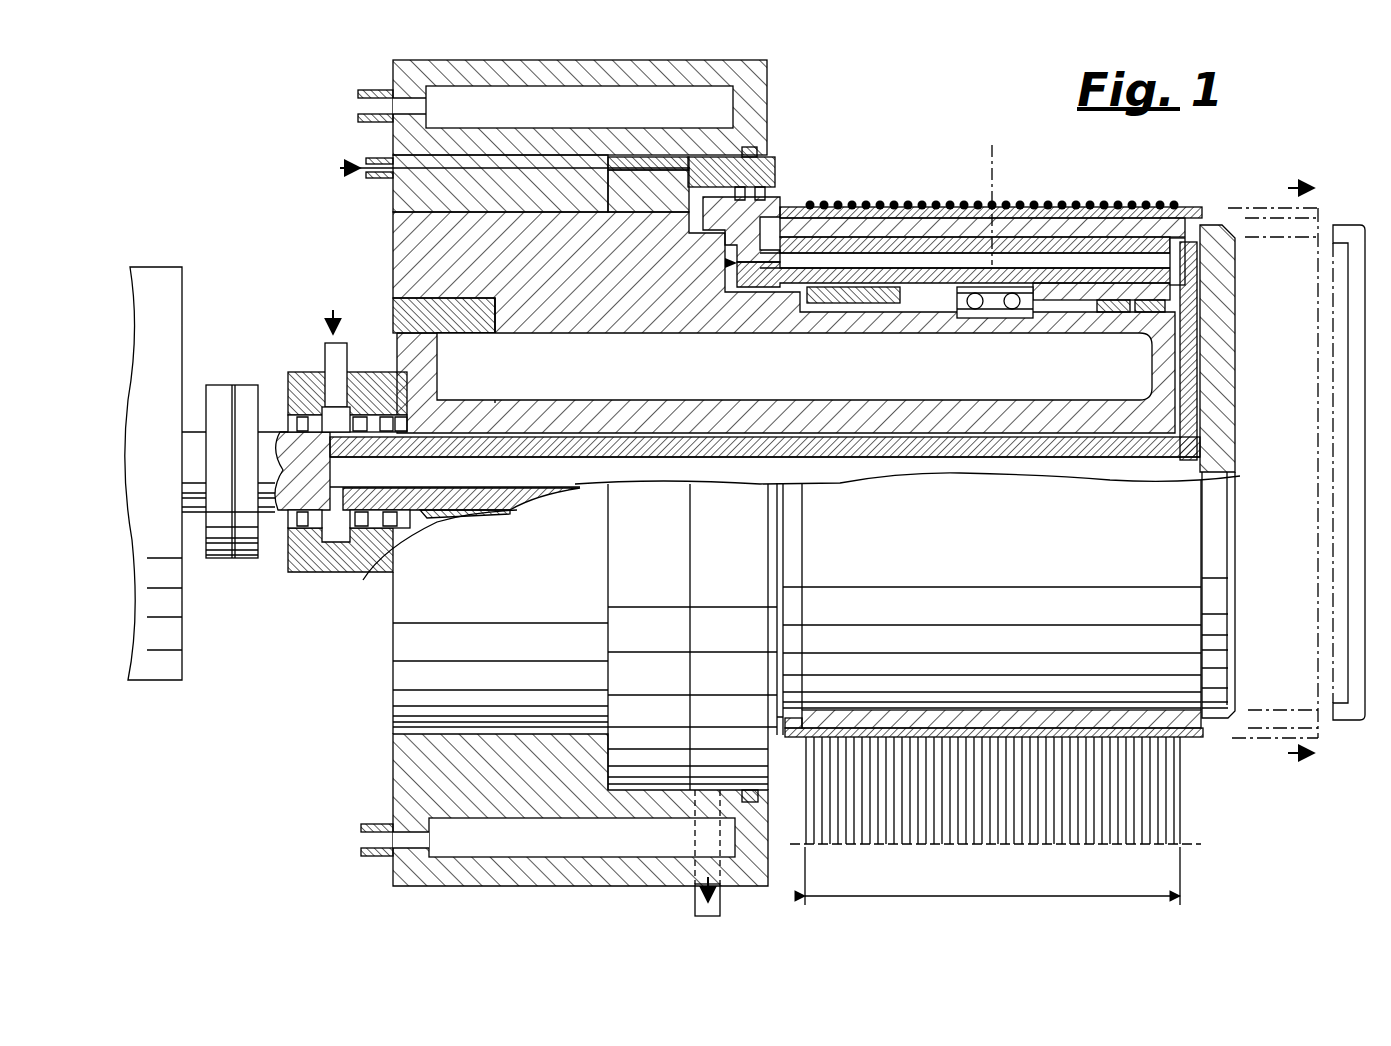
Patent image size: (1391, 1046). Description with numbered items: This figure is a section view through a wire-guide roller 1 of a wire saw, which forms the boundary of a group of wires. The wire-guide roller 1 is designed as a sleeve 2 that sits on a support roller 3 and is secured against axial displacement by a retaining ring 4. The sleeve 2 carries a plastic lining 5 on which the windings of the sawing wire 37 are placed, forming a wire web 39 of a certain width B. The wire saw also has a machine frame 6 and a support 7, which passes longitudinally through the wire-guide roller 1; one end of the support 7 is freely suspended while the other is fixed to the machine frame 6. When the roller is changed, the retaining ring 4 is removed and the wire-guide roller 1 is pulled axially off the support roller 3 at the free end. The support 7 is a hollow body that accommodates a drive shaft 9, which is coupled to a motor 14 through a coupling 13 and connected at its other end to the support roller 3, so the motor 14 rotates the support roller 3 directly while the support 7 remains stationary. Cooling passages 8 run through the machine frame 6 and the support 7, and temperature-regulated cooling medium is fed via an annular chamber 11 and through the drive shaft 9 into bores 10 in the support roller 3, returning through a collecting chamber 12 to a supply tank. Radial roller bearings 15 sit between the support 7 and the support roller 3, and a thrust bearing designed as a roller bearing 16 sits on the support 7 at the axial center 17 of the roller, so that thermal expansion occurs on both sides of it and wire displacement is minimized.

The wire-guide roller 1 is at (1060, 200).
The sleeve 2 is at (1088, 230).
The support roller 3 is at (1130, 245).
The retaining ring 4 is at (1216, 227).
The plastic lining 5 is at (925, 208).
The machine frame 6 is at (752, 82).
The support 7 is at (1163, 398).
The cooling passages 8 is at (722, 110).
The drive shaft 9 is at (278, 440).
The bores 10 is at (837, 255).
The annular chamber 11 is at (327, 413).
The collecting chamber 12 is at (707, 183).
The coupling 13 is at (223, 548).
The motor 14 is at (170, 293).
The roller bearings 15 is at (1160, 296).
The roller bearing 16 is at (975, 293).
The axial center 17 is at (995, 157).
The sawing wire 37 is at (886, 206).
The wire web 39 is at (1176, 826).